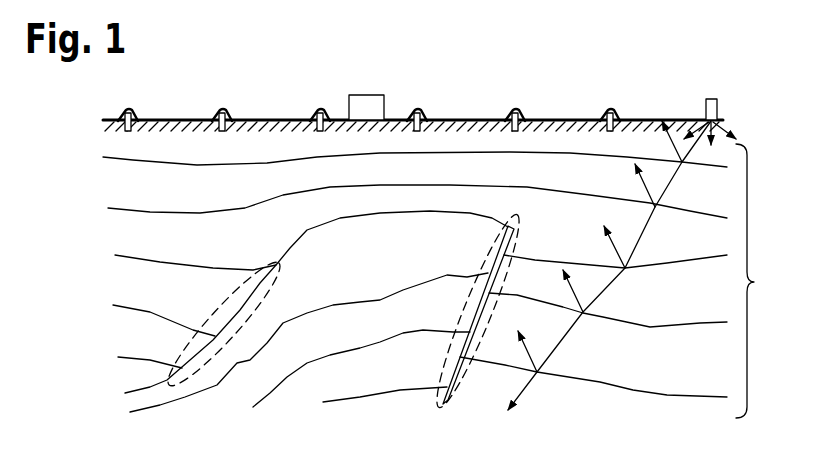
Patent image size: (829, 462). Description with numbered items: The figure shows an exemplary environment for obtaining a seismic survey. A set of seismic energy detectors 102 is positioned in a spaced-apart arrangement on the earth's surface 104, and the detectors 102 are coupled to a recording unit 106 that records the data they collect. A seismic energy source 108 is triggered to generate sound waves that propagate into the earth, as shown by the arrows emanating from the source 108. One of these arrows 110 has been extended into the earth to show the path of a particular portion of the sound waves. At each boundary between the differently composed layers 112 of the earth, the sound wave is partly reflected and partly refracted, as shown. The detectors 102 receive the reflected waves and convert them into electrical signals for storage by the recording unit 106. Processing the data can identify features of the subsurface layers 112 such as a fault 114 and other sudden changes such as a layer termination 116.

The seismic energy detectors 102 is at (369, 102).
The earth's surface 104 is at (117, 122).
The recording unit 106 is at (369, 95).
The seismic energy source 108 is at (709, 99).
The arrow 110 is at (526, 387).
The layers 112 is at (447, 281).
The fault 114 is at (437, 408).
The layer termination 116 is at (168, 385).